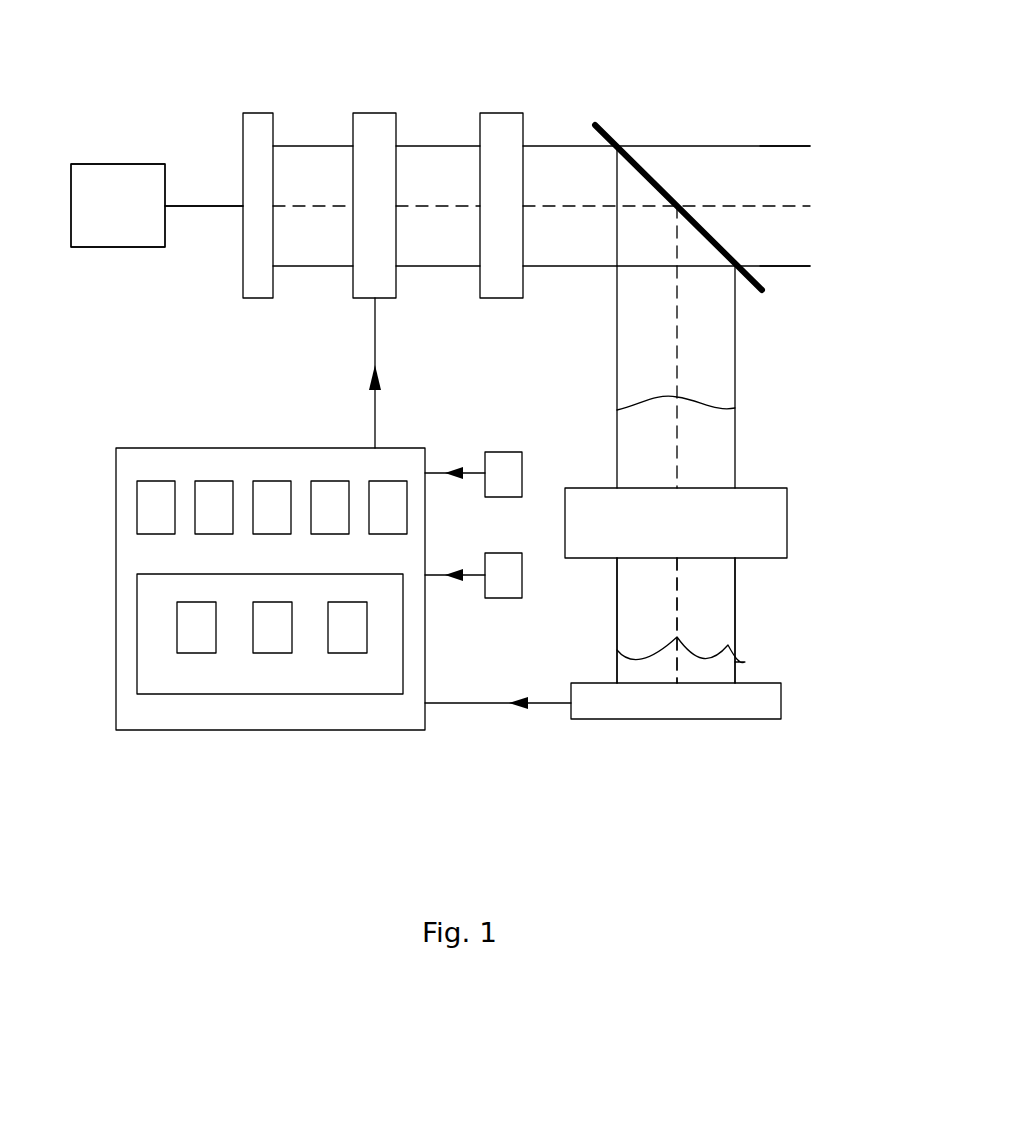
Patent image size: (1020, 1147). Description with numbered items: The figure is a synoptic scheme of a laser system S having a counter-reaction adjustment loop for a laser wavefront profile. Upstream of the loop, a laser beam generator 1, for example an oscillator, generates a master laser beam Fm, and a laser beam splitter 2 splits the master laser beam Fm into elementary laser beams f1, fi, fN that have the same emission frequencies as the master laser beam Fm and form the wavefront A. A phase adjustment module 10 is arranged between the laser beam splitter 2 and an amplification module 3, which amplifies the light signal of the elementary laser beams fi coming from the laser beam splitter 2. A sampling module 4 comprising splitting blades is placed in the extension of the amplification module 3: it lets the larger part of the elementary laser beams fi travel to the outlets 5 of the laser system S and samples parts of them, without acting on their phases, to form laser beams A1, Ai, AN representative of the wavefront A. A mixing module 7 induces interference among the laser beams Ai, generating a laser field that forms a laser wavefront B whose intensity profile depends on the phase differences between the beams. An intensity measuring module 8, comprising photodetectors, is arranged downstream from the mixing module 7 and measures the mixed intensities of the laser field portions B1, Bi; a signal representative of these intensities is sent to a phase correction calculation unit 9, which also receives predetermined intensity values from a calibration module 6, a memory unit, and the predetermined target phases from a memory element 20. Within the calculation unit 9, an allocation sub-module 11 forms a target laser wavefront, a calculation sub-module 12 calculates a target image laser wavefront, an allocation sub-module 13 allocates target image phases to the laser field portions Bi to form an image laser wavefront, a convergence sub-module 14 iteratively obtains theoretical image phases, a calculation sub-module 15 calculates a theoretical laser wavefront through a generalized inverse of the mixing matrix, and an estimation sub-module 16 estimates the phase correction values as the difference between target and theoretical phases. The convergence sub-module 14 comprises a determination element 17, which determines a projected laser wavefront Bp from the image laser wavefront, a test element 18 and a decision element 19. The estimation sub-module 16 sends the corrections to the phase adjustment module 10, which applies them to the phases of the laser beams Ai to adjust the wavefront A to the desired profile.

The laser system S is at (110, 56).
The laser beam generator 1 is at (95, 163).
The laser beam splitter 2 is at (265, 113).
The amplification module 3 is at (503, 113).
The sampling module 4 is at (602, 122).
The outlets 5 is at (815, 132).
The calibration module 6 is at (500, 452).
The mixing module 7 is at (787, 522).
The intensity measuring module 8 is at (781, 700).
The phase correction calculation unit 9 is at (116, 626).
The phase adjustment module 10 is at (375, 113).
The allocation sub-module 11 is at (148, 481).
The calculation sub-module 12 is at (218, 481).
The allocation sub-module 13 is at (276, 481).
The convergence sub-module 14 is at (233, 697).
The calculation sub-module 15 is at (332, 481).
The estimation sub-module 16 is at (394, 481).
The determination element 17 is at (186, 654).
The test element 18 is at (270, 654).
The decision element 19 is at (345, 654).
The memory element 20 is at (493, 598).
The master laser beam Fm is at (200, 208).
The first elementary laser beam f1 is at (320, 146).
The elementary laser beam fi is at (300, 206).
The N-th elementary laser beam fN is at (313, 268).
The laser wavefront A is at (735, 408).
The N-th laser beam AN is at (617, 373).
The first laser beam A1 is at (735, 355).
The laser beam Ai is at (677, 342).
The laser wavefront B is at (735, 662).
The first laser field portion B1 is at (735, 612).
The laser field portion Bi is at (677, 612).
The projected laser wavefront Bp is at (617, 640).